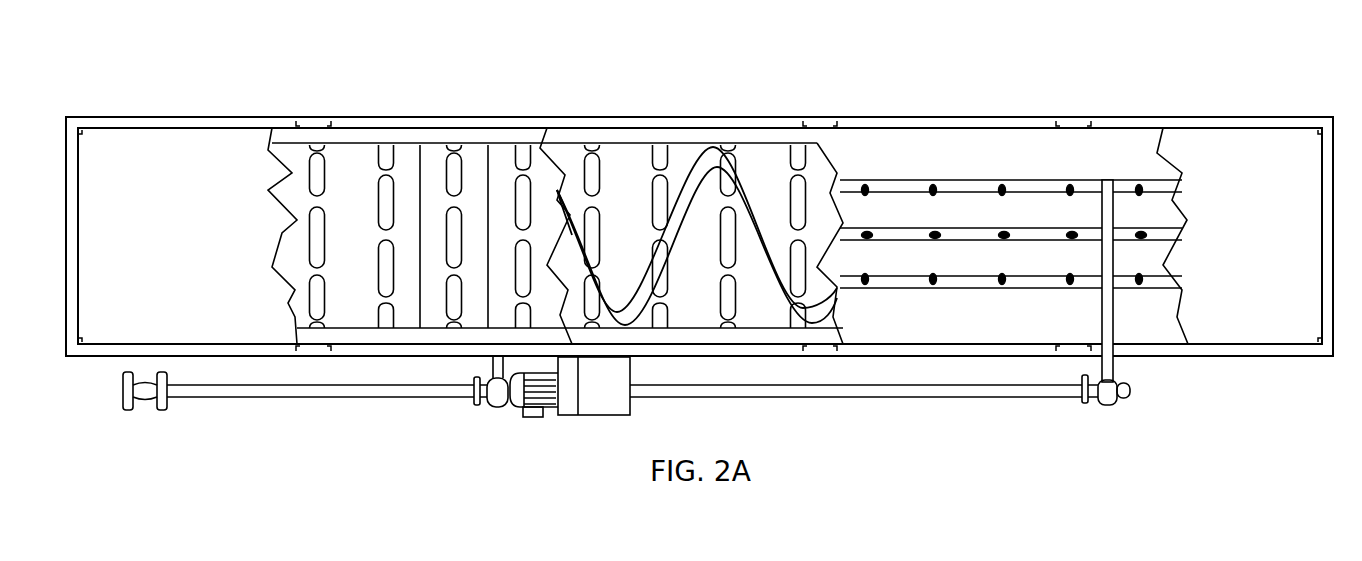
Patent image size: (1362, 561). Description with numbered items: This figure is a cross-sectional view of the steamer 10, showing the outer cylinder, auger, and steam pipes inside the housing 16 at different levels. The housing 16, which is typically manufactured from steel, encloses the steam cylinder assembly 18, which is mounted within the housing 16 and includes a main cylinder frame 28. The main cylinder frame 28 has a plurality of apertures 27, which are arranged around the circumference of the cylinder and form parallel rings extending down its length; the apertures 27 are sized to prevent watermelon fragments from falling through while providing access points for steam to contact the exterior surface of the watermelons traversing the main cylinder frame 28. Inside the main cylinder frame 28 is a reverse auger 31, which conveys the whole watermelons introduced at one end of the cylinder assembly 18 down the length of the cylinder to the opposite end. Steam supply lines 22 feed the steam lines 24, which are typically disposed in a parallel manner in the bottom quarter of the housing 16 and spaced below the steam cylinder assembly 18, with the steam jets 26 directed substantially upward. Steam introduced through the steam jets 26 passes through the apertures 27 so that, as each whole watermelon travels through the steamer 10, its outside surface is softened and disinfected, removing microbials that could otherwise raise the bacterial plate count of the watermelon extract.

The steamer 10 is at (1268, 86).
The housing 16 is at (146, 150).
The steam cylinder assembly 18 is at (362, 138).
The steam supply lines 22 is at (953, 392).
The steam lines 24 is at (965, 182).
The steam jets 26 is at (864, 185).
The apertures 27 is at (450, 160).
The main cylinder frame 28 is at (626, 168).
The reverse auger 31 is at (717, 160).